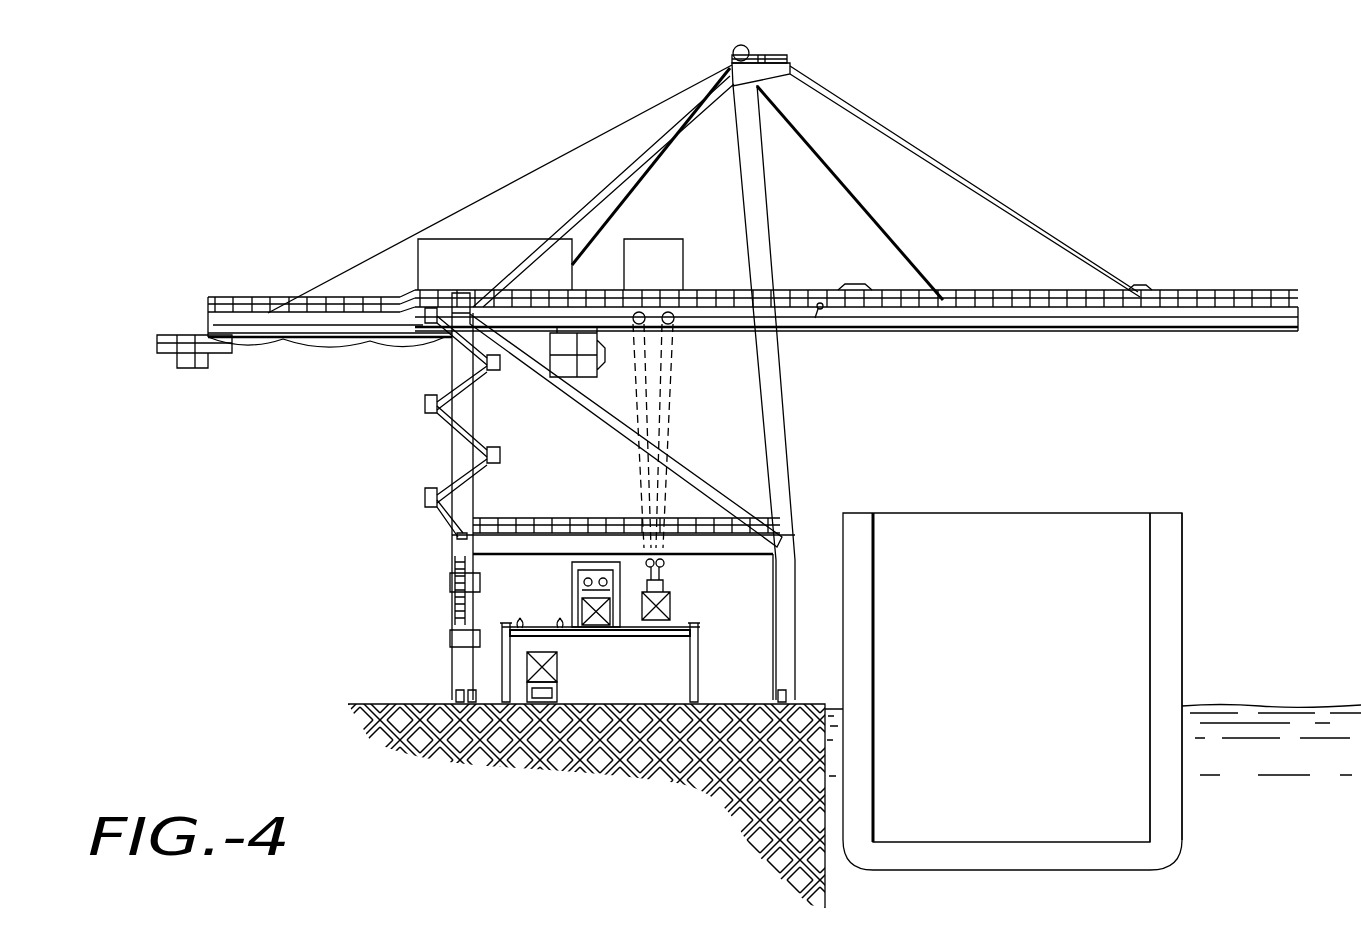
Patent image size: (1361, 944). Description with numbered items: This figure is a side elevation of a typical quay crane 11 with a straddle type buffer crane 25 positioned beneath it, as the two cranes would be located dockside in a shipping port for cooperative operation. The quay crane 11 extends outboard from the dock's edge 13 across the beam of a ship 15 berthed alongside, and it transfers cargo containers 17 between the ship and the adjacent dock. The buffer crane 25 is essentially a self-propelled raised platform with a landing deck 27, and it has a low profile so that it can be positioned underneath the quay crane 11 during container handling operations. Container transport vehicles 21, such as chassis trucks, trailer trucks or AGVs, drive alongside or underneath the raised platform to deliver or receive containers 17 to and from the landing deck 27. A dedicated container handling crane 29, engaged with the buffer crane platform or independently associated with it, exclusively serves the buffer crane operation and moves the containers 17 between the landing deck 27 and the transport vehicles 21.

The quay crane 11 is at (932, 104).
The dock's edge 13 is at (825, 786).
The ship 15 is at (1168, 583).
The cargo container 17 is at (672, 600).
The container transport vehicle 21 is at (557, 685).
The buffer crane 25 is at (610, 637).
The landing deck 27 is at (692, 626).
The container handling crane 29 is at (572, 571).